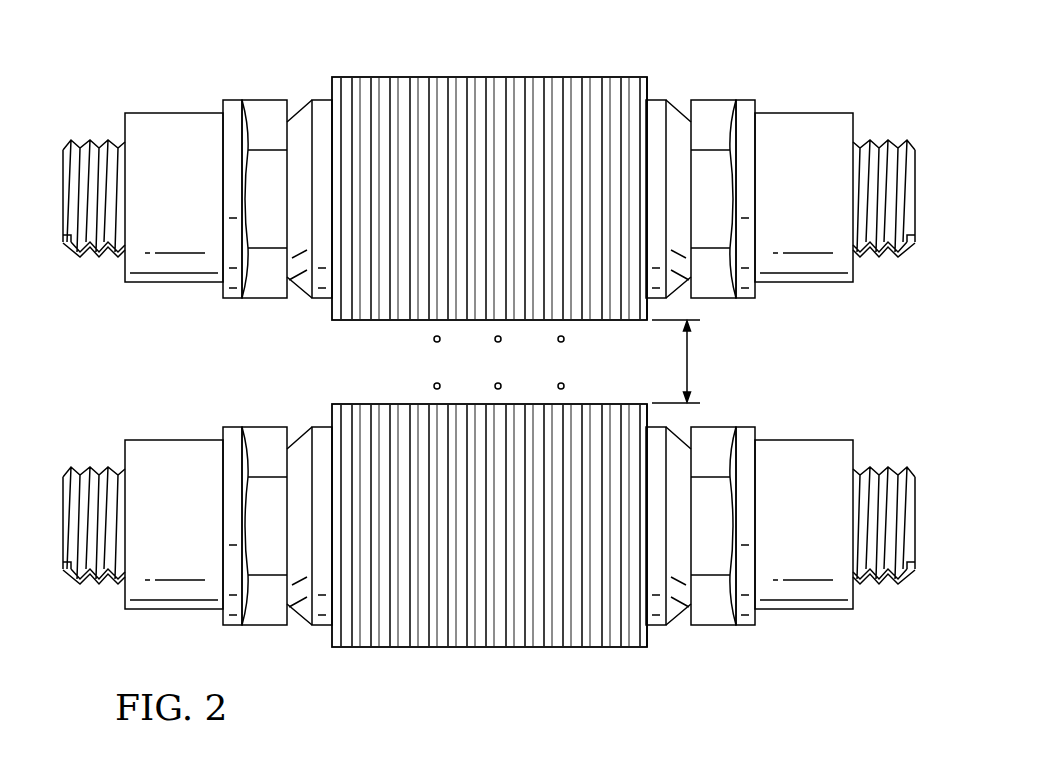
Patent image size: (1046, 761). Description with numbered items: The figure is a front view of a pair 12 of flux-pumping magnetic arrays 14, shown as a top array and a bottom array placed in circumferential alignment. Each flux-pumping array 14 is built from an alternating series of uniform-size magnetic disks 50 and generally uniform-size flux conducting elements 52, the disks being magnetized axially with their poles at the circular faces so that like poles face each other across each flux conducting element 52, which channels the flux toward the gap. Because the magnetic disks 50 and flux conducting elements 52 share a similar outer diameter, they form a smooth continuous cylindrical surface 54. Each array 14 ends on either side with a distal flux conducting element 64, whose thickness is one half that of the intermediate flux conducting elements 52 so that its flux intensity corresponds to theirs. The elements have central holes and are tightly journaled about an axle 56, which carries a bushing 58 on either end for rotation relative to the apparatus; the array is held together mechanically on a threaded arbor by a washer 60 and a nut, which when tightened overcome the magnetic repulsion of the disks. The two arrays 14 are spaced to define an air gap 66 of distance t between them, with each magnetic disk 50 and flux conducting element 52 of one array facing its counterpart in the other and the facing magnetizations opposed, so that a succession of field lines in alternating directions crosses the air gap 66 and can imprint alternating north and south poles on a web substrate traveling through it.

The pair of flux-pumping magnetic arrays 12 is at (52, 52).
The flux-pumping magnetic array 14 is at (348, 54).
The magnetic disk 50 is at (402, 87).
The flux conducting element 52 is at (507, 88).
The cylindrical surface 54 is at (636, 73).
The axle 56 is at (891, 138).
The bushing 58 is at (803, 113).
The washer 60 is at (755, 620).
The distal flux conducting element 64 is at (332, 90).
The air gap 66 is at (315, 323).